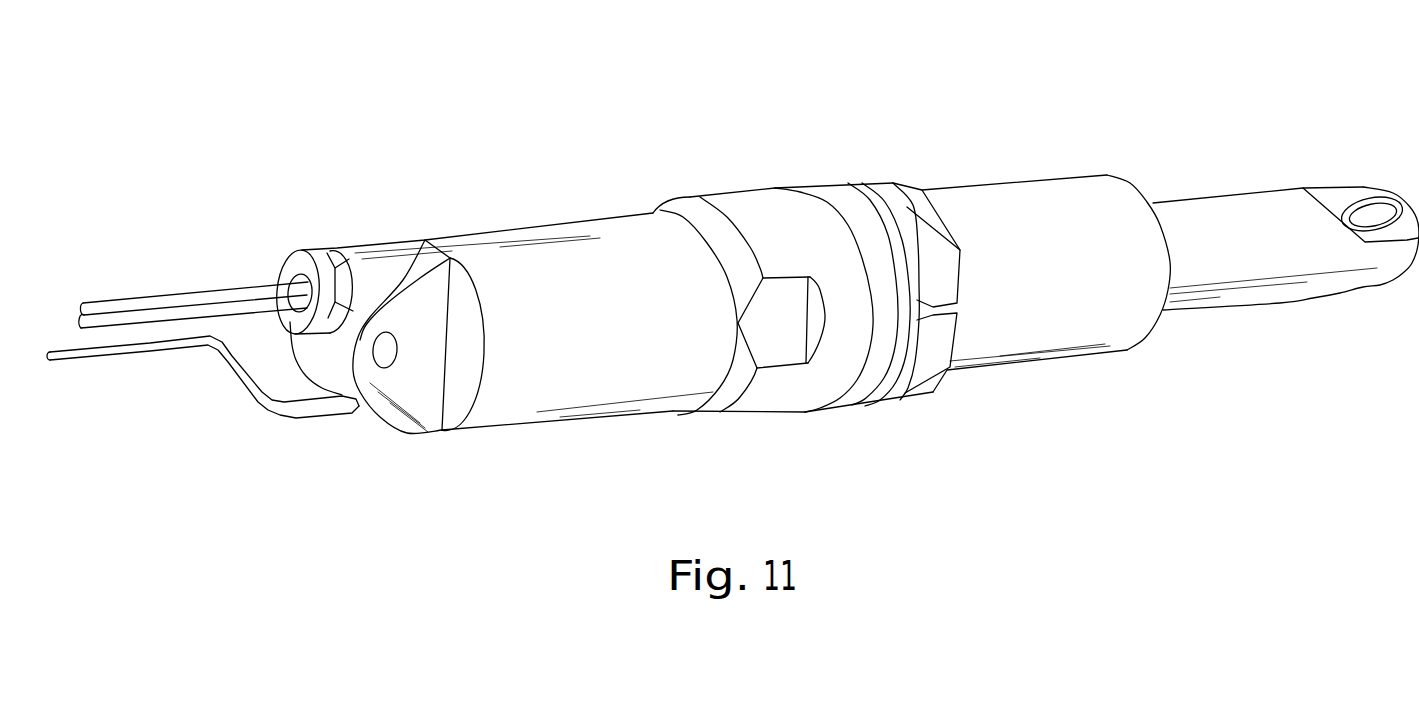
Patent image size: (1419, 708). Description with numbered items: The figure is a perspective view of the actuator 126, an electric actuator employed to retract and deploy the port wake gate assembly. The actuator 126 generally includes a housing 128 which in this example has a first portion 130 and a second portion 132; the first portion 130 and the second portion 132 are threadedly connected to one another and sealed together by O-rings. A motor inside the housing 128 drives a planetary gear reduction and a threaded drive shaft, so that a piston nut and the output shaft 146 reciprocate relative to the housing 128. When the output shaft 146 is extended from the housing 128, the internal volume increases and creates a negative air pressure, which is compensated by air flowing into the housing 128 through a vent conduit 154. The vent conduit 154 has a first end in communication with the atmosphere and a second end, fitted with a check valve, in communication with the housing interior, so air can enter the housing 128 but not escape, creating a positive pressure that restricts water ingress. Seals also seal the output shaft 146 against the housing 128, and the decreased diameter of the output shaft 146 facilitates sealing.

The actuator 126 is at (345, 173).
The housing 128 is at (837, 183).
The first portion 130 is at (741, 200).
The second portion 132 is at (1023, 225).
The output shaft 146 is at (1267, 218).
The vent conduit 154 is at (147, 353).